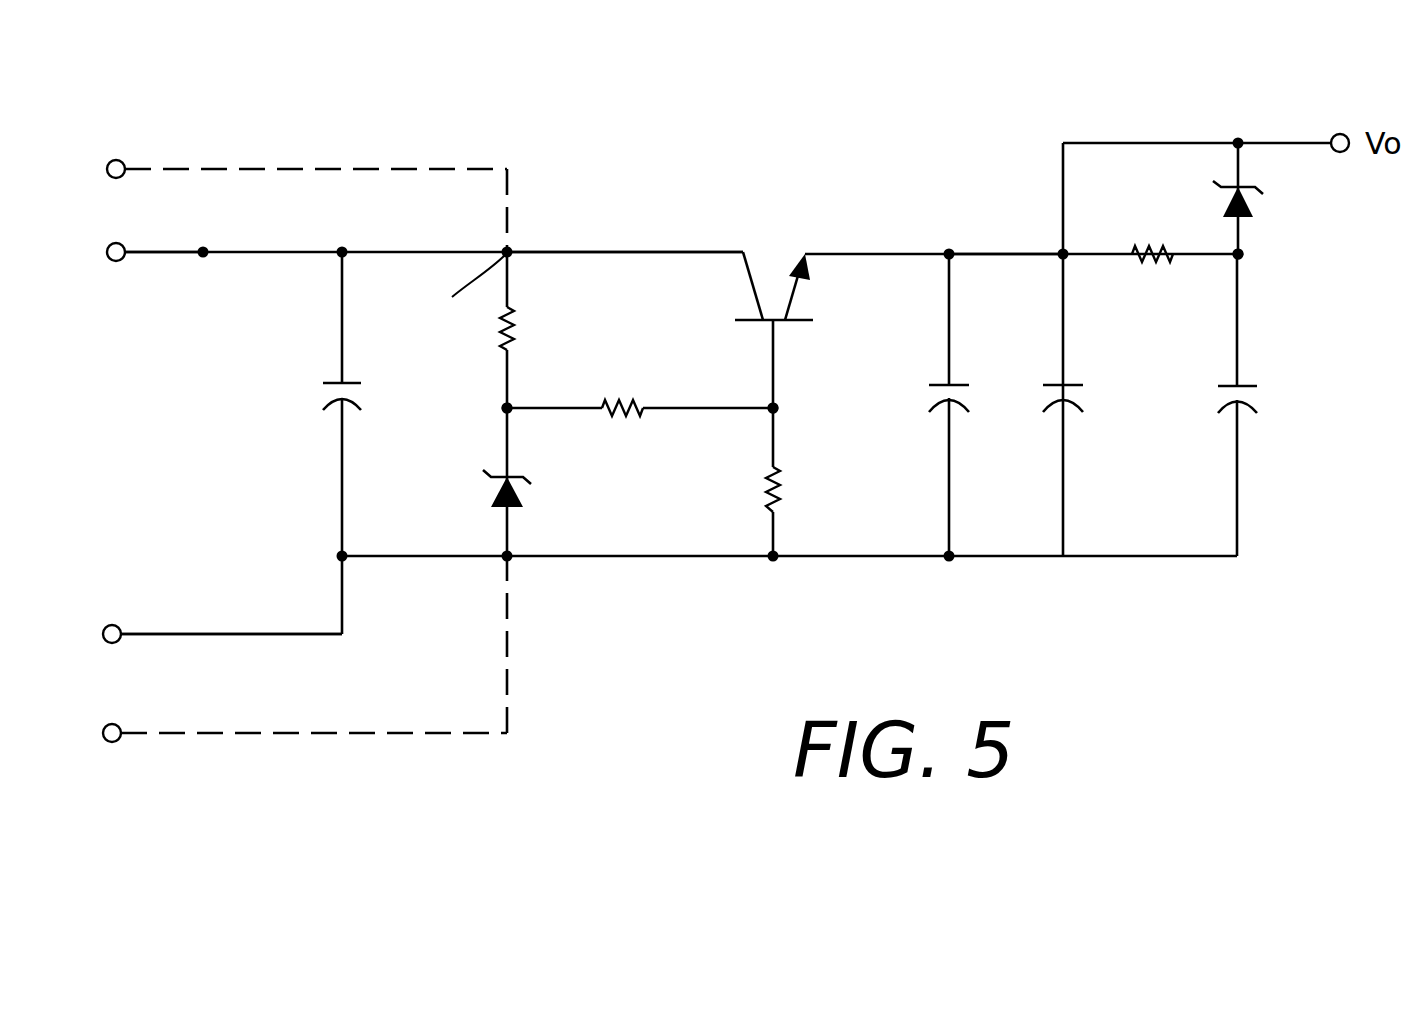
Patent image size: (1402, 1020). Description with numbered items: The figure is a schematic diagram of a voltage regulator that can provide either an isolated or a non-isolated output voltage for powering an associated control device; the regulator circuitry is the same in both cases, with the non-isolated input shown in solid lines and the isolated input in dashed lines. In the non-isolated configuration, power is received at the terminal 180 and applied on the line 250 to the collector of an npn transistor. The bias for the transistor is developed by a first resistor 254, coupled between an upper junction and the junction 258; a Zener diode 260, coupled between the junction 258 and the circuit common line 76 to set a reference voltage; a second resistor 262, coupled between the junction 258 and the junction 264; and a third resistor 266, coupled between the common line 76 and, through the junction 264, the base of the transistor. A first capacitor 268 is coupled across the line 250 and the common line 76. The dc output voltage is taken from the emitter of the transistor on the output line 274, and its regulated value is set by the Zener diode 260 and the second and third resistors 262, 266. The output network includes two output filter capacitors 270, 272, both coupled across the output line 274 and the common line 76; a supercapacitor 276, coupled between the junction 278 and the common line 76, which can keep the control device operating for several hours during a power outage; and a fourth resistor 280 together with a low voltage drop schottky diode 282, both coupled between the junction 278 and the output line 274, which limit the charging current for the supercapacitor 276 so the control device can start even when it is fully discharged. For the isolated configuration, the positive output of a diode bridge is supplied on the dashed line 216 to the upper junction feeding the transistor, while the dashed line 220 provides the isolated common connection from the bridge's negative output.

The dashed line 216 is at (140, 169).
The terminal 180 is at (117, 237).
The circuit common line 76 is at (117, 622).
The dashed line 220 is at (270, 735).
The line 250 is at (560, 252).
The resistor R6 254 is at (512, 318).
The junction 258 is at (502, 406).
The Zener diode D8 260 is at (513, 507).
The resistor R7 262 is at (603, 415).
The junction 264 is at (777, 405).
The resistor R8 266 is at (762, 485).
The capacitor C6 268 is at (355, 410).
The capacitor C7 270 is at (963, 405).
The capacitor C8 272 is at (1075, 405).
The output line 274 is at (995, 254).
The capacitor C9 276 is at (1247, 418).
The junction 278 is at (1245, 257).
The resistor R9 280 is at (1147, 262).
The schottky diode D9 282 is at (1252, 186).